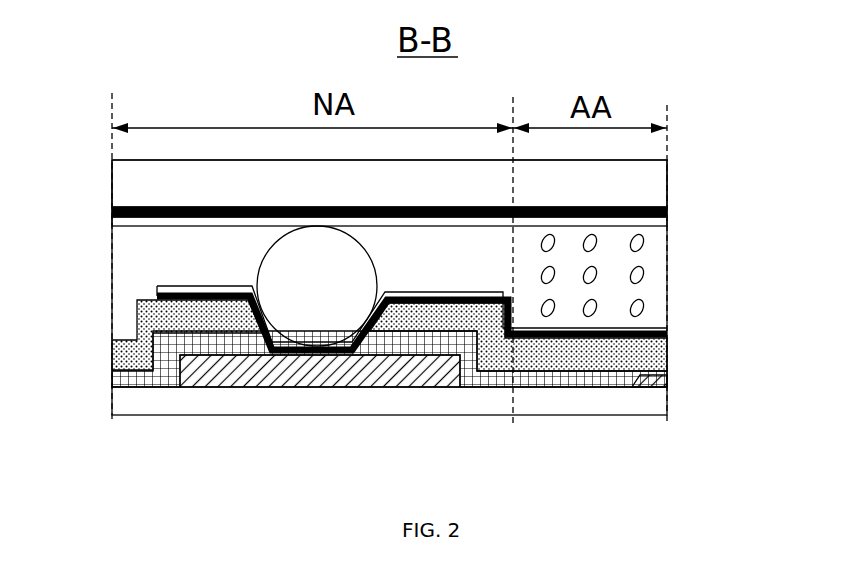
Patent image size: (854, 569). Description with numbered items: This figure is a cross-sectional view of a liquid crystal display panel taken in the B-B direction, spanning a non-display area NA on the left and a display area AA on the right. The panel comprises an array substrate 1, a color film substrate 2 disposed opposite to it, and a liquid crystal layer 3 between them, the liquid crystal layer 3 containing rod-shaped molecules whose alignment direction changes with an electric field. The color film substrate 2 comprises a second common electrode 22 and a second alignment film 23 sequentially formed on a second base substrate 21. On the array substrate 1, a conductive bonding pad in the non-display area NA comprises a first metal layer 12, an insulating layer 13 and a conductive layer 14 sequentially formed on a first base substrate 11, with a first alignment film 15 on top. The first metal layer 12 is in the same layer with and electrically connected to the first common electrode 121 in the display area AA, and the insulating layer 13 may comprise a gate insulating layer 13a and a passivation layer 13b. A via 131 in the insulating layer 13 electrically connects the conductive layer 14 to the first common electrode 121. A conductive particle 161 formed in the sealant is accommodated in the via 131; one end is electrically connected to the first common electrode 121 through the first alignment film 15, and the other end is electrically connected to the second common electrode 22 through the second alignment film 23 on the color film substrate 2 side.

The array substrate 1 is at (438, 322).
The first base substrate 11 is at (667, 405).
The first metal layer 12 is at (278, 384).
The first common electrode 121 is at (667, 390).
The insulating layer 13 is at (473, 344).
The gate insulating layer 13a is at (667, 378).
The passivation layer 13b is at (667, 353).
The via 131 is at (372, 386).
The conductive layer 14 is at (667, 337).
The first alignment film 15 is at (667, 320).
The conductive particle 161 is at (264, 252).
The color film substrate 2 is at (399, 171).
The second base substrate 21 is at (667, 168).
The second common electrode 22 is at (667, 213).
The second alignment film 23 is at (667, 226).
The liquid crystal layer 3 is at (660, 265).